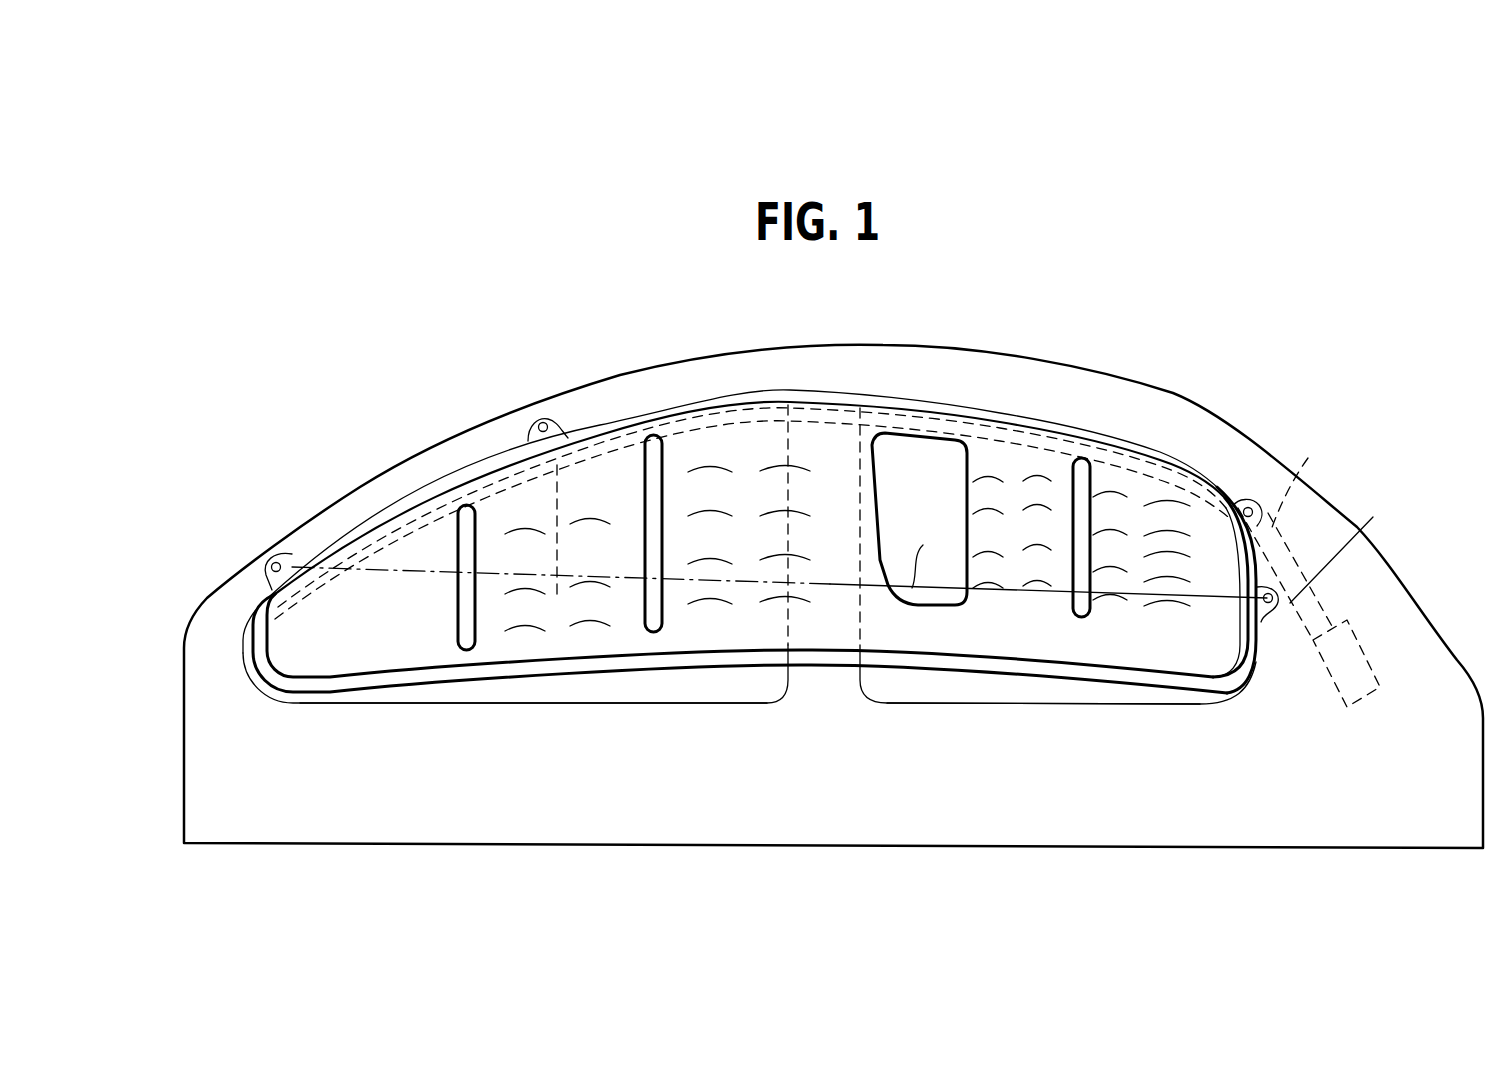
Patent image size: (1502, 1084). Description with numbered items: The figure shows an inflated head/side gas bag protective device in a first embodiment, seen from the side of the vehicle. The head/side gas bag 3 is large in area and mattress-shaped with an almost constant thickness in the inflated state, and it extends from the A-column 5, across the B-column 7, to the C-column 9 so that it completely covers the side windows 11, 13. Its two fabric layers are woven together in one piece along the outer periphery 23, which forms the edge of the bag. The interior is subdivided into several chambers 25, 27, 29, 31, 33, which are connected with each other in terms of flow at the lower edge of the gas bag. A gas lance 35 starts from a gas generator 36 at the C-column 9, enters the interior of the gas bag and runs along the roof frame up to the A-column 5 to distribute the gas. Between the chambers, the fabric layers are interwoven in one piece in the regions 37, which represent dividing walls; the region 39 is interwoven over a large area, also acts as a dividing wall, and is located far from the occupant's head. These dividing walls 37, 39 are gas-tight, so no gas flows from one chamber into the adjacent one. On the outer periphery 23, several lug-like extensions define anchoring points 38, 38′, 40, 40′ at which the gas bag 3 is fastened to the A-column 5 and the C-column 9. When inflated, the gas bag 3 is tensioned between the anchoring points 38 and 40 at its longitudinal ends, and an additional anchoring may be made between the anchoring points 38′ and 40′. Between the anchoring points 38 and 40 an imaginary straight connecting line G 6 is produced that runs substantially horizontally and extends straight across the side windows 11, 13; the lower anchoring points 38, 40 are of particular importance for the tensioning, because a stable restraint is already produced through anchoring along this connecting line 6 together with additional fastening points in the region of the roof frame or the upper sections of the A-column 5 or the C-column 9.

The head/side gas bag 3 is at (362, 572).
The A-column 5 is at (217, 635).
The optical axis 6 is at (925, 556).
The B-column 7 is at (835, 672).
The C-column 9 is at (1340, 550).
The side window 11 is at (505, 690).
The side window 13 is at (1092, 690).
The outer periphery 23 is at (746, 393).
The chamber 25 is at (378, 633).
The chamber 27 is at (627, 605).
The chamber 29 is at (743, 607).
The chamber 31 is at (1020, 607).
The chamber 33 is at (1170, 607).
The gas lance 35 is at (1309, 482).
The gas generator 36 is at (1363, 663).
The dividing wall region 37 is at (462, 520).
The anchoring point 38 is at (280, 558).
The anchoring point 38′ is at (541, 420).
The dividing wall region 39 is at (935, 458).
The anchoring point 40 is at (1262, 612).
The anchoring point 40′ is at (1253, 503).